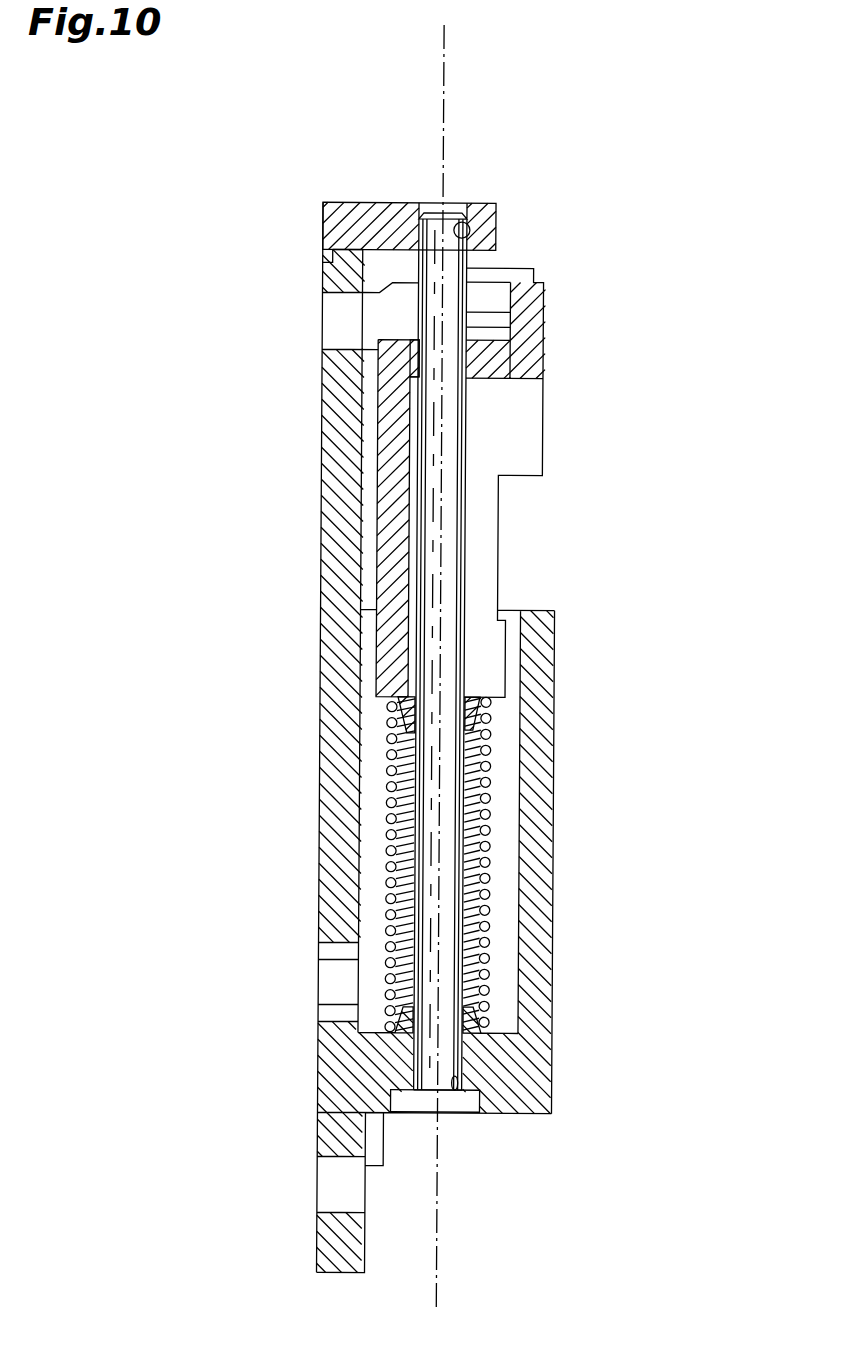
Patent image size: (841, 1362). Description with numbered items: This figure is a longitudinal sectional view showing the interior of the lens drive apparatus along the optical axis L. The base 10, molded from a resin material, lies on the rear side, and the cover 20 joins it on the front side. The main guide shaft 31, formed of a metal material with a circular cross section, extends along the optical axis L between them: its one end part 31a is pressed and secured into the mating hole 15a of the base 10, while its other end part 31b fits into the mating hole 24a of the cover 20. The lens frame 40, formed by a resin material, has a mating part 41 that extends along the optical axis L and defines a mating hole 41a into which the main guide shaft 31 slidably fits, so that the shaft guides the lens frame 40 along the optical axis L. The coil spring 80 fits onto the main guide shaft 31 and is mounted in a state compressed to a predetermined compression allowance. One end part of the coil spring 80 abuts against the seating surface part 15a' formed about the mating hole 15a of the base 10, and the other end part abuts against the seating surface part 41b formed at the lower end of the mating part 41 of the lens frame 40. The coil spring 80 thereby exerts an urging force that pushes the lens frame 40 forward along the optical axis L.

The base 10 is at (312, 895).
The mating hole 15a is at (441, 1133).
The seating surface part 15a' is at (546, 1022).
The cover 20 is at (389, 194).
The mating hole 24a is at (468, 230).
The main guide shaft 31 is at (466, 565).
The one end part 31a is at (427, 1085).
The other end part 31b is at (455, 215).
The lens frame 40 is at (552, 351).
The mating part 41 is at (388, 514).
The mating hole 41a is at (412, 351).
The seating surface part 41b is at (499, 703).
The coil spring 80 is at (506, 856).
The optical axis L is at (444, 62).